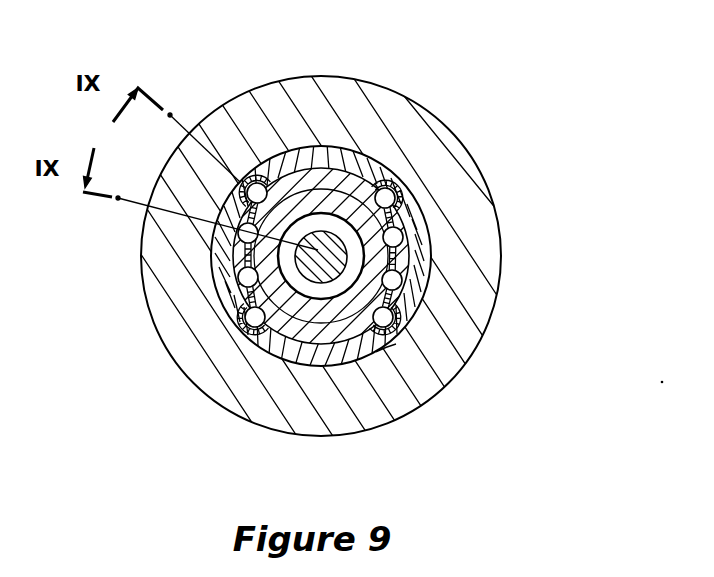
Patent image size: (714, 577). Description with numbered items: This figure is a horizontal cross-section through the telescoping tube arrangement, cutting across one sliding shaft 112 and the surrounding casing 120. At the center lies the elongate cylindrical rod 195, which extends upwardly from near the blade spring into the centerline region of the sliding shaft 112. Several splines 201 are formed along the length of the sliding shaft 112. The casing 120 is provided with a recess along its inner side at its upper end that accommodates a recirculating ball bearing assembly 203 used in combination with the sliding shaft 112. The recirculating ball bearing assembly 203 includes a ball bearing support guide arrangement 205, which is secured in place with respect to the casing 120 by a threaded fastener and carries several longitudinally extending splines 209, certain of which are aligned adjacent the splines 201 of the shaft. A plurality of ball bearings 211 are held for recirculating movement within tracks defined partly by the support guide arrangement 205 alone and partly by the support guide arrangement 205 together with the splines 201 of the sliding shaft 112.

The casing 120 is at (478, 322).
The recirculating ball bearing assembly 203 is at (434, 269).
The sliding shaft 112 is at (323, 322).
The elongate cylindrical rod 195 is at (318, 249).
The ball bearing support guide arrangement 205 is at (382, 335).
The ball bearings 211 is at (391, 193).
The splines 209 is at (405, 235).
The splines 201 is at (236, 304).